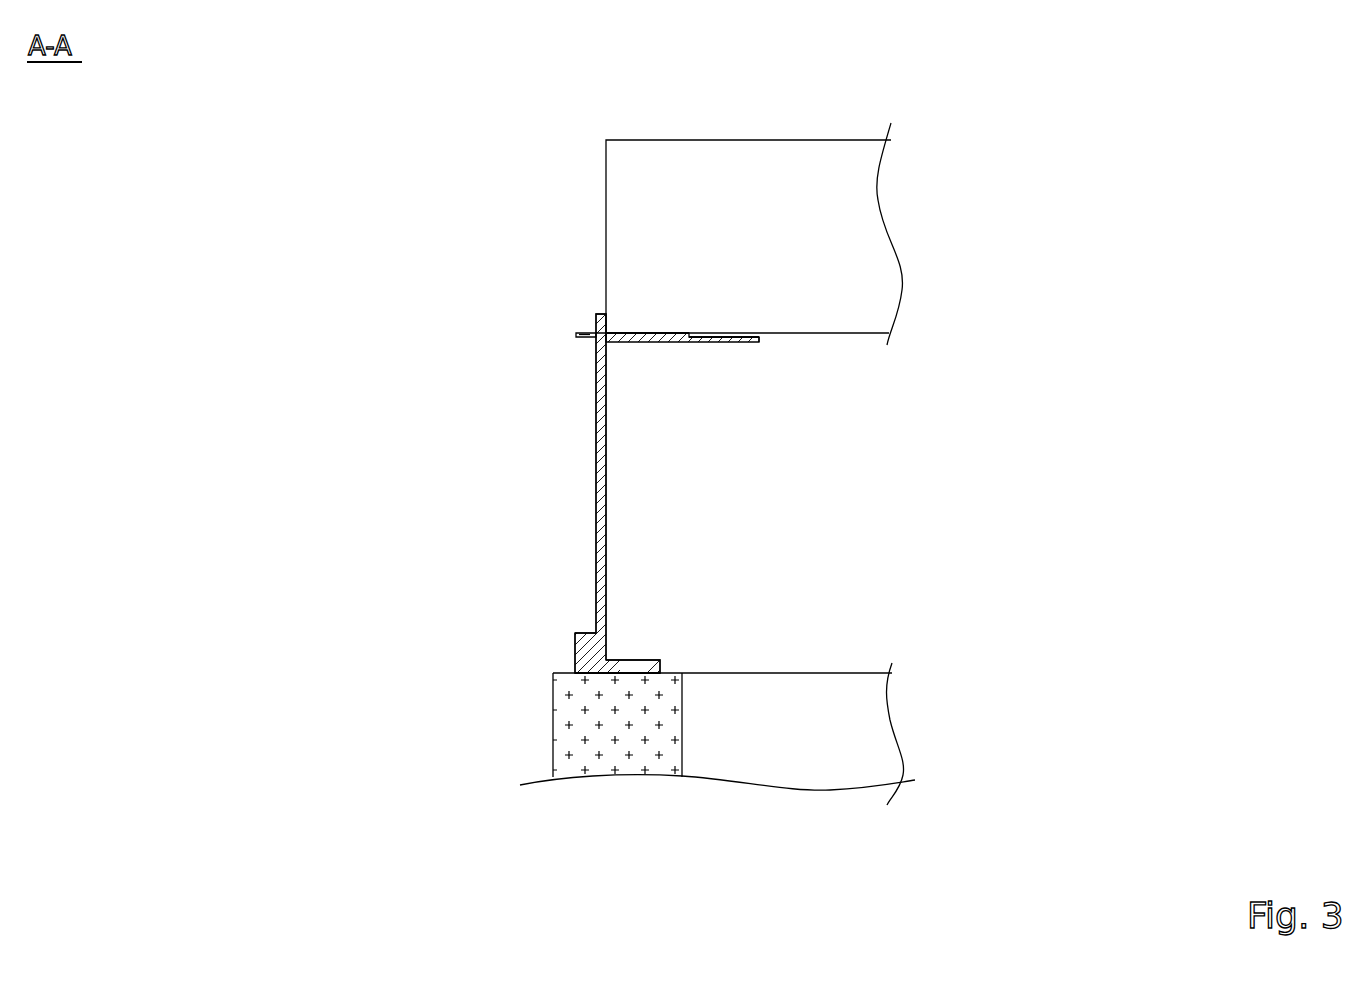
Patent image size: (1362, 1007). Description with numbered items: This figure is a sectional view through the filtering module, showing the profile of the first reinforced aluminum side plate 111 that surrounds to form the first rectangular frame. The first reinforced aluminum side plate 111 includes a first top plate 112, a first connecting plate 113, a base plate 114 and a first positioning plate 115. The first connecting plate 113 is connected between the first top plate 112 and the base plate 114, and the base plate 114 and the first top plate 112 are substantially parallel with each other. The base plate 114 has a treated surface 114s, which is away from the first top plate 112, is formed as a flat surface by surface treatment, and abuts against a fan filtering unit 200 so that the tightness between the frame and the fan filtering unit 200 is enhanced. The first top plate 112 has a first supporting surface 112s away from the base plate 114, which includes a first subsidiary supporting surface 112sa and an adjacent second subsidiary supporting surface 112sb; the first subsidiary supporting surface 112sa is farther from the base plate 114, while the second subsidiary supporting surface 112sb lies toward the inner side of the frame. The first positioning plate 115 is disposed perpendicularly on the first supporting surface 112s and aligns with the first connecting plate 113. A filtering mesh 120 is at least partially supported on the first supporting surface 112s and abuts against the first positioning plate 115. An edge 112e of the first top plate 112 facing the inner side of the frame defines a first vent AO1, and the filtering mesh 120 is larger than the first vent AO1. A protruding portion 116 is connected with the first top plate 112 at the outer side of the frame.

The first reinforced aluminum side plate 111 is at (478, 419).
The first top plate 112 is at (660, 344).
The edge 112e is at (760, 345).
The first supporting surface 112s is at (765, 82).
The first subsidiary supporting surface 112sa is at (646, 333).
The second subsidiary supporting surface 112sb is at (710, 336).
The first connecting plate 113 is at (596, 484).
The base plate 114 is at (640, 663).
The treated surface 114s is at (597, 672).
The first positioning plate 115 is at (596, 322).
The protruding portion 116 is at (576, 335).
The filtering mesh 120 is at (808, 152).
The fan filtering unit 200 is at (553, 737).
The first vent AO1 is at (832, 362).